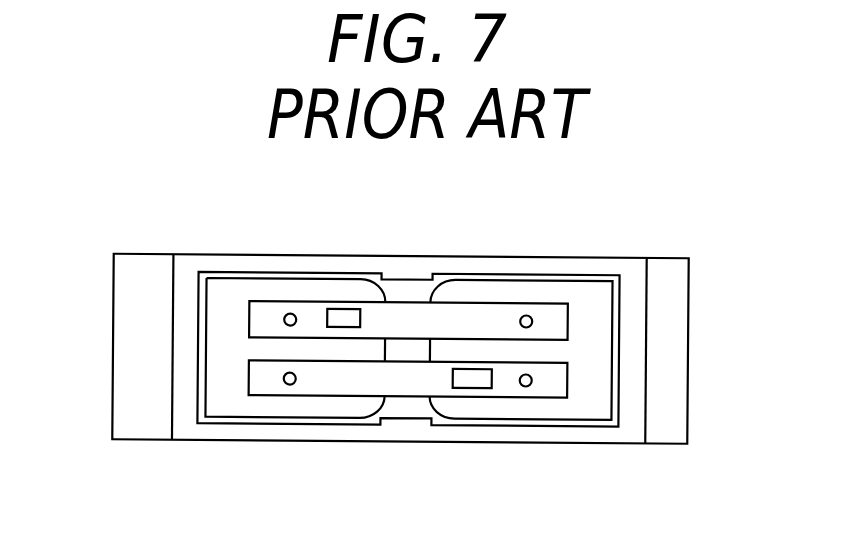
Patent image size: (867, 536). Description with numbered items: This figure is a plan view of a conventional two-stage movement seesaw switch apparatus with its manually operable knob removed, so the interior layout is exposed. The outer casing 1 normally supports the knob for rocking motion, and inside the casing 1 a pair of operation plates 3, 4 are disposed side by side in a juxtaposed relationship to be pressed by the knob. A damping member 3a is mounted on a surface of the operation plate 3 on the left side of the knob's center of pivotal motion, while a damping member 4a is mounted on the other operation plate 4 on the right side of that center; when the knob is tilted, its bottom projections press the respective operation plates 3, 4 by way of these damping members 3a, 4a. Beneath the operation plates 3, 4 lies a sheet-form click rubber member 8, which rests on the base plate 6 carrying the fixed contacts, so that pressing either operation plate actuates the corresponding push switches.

The casing 1 is at (633, 289).
The operation plate 3 is at (470, 313).
The damping member 3a is at (342, 316).
The operation plate 4 is at (332, 380).
The damping member 4a is at (475, 378).
The base plate 6 is at (668, 416).
The click rubber member 8 is at (594, 364).